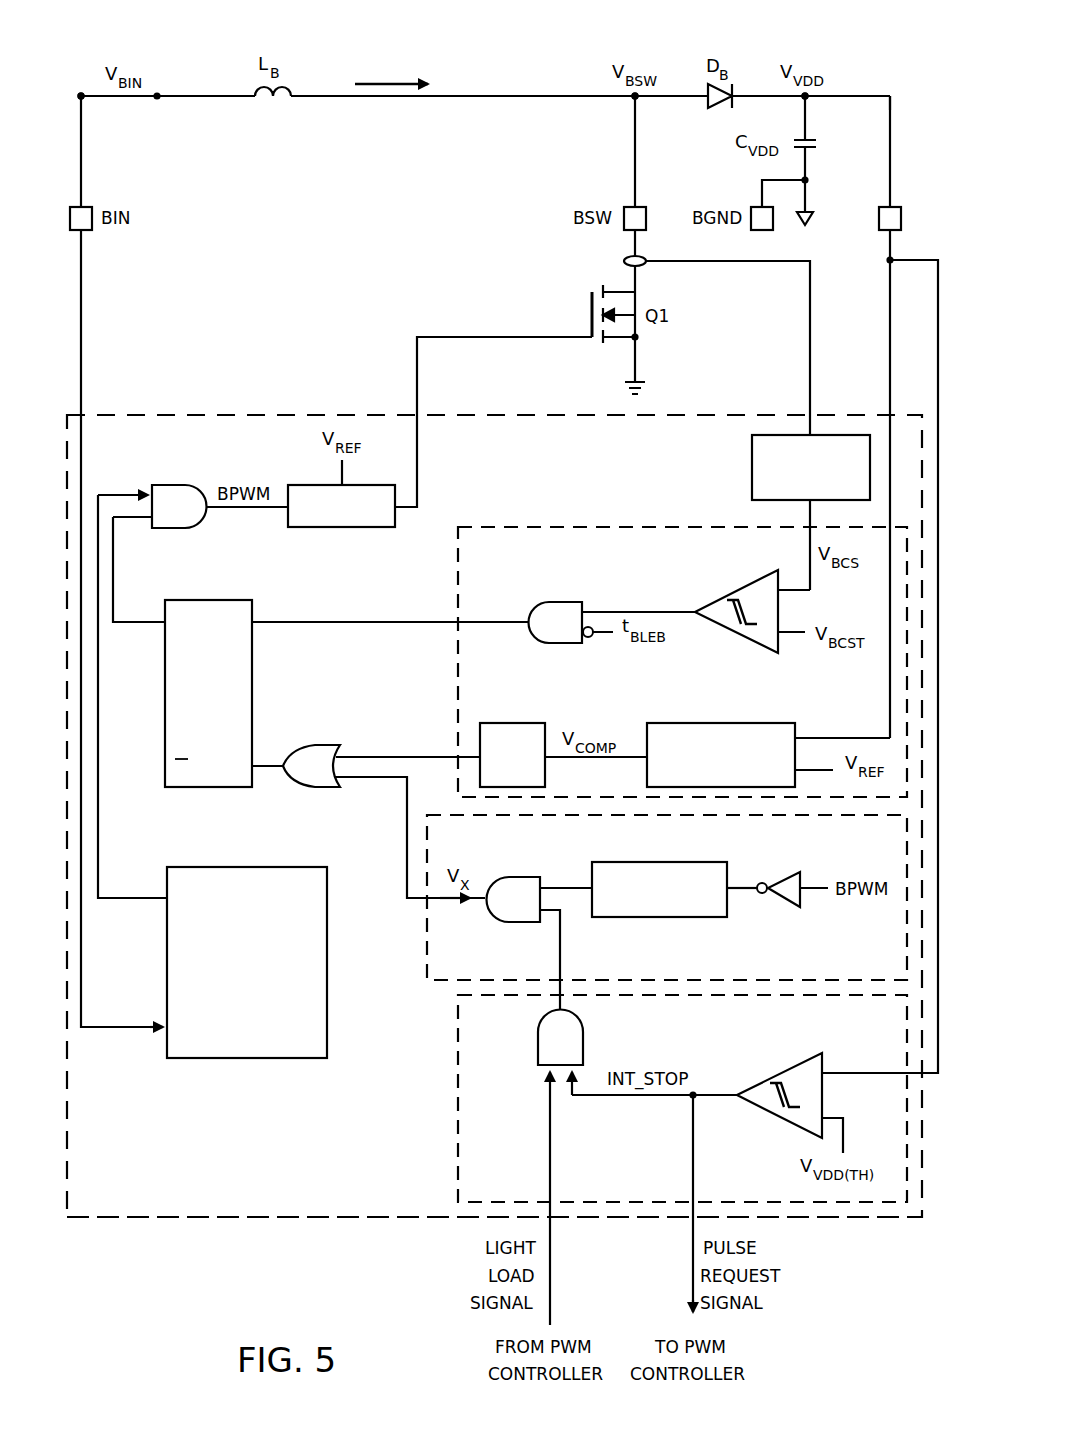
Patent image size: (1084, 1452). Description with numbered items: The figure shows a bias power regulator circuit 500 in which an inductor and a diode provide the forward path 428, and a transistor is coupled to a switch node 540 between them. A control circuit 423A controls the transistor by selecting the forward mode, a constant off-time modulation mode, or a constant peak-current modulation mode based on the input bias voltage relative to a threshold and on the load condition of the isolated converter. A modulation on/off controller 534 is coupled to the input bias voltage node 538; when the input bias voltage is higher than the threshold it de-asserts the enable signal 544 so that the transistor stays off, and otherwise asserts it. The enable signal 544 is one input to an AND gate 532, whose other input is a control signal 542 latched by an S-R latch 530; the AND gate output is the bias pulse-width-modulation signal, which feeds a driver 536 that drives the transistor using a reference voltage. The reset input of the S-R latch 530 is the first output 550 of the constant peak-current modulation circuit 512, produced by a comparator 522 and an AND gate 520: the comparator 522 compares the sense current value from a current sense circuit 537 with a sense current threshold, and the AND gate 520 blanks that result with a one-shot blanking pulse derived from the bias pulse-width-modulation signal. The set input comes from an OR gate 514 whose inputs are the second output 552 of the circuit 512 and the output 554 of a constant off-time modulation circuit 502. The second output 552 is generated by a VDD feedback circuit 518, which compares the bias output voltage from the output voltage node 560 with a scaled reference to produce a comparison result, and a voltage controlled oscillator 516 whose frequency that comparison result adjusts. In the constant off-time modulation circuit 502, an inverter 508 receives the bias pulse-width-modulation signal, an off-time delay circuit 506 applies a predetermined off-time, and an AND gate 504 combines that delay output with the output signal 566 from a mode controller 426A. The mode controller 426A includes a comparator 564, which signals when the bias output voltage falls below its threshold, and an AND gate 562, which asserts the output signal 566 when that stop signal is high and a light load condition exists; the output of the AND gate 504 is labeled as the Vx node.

The bias power regulator circuit 500 is at (896, 58).
The VBIN node 538 is at (86, 92).
The forward path 428 is at (395, 82).
The switch node 540 is at (630, 104).
The VVDD node 560 is at (808, 104).
The AND gate 532 is at (172, 482).
The driver 536 is at (348, 529).
The current sense circuit 537 is at (750, 468).
The constant peak-current modulation circuit 512 is at (614, 521).
The control signal 542 is at (158, 620).
The first output 550 is at (262, 620).
The S-R latch 530 is at (228, 704).
The voltage controlled oscillator 516 is at (509, 722).
The AND gate 520 is at (560, 646).
The comparator 522 is at (736, 648).
The VDD feedback circuit 518 is at (752, 722).
The second output 552 is at (343, 749).
The output 554 is at (343, 789).
The OR gate 514 is at (316, 790).
The enable signal 544 is at (156, 900).
The modulation on/off controller 534 is at (248, 1060).
The constant off-time modulation circuit 502 is at (420, 922).
The AND gate 504 is at (491, 925).
The output signal 566 is at (549, 925).
The TOFF delay circuit 506 is at (663, 920).
The inverter 508 is at (784, 905).
The AND gate 562 is at (537, 1040).
The comparator 564 is at (782, 1130).
The mode controller 426A is at (452, 1127).
The control circuit 423A is at (334, 1224).